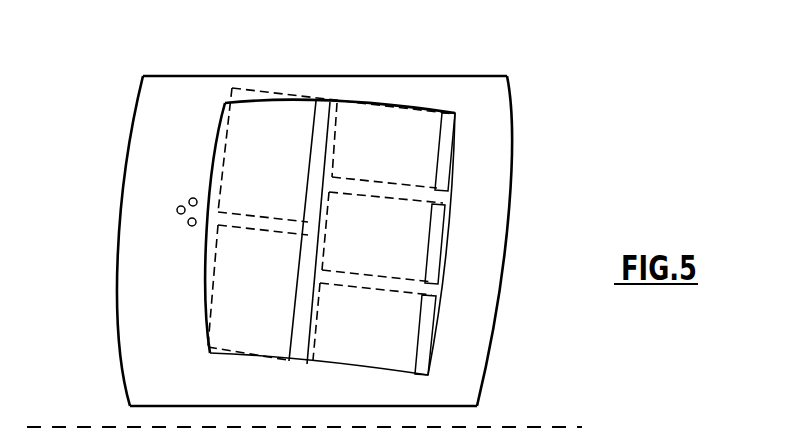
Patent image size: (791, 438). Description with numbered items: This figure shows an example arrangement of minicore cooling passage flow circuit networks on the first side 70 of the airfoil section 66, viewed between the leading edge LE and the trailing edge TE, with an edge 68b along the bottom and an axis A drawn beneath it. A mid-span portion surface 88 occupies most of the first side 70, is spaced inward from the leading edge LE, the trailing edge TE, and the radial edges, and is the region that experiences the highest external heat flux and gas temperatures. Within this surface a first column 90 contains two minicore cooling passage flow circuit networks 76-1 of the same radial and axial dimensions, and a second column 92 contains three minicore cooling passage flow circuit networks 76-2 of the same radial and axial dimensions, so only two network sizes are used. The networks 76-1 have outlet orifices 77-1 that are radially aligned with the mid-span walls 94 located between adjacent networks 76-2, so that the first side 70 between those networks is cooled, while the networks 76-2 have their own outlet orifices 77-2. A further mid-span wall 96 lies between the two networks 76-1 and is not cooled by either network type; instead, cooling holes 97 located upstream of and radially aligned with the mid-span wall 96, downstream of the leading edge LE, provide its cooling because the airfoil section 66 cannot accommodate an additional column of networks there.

The airfoil section 66 is at (327, 243).
The first side 70 is at (140, 340).
The bottom edge 68b is at (467, 383).
The trailing edge TE is at (512, 298).
The leading edge LE is at (115, 247).
The mid-span portion surface 88 is at (222, 116).
The first column 90 is at (298, 72).
The second column 92 is at (410, 90).
The minicore cooling passage flow circuit network 76-1 is at (248, 88).
The minicore cooling passage flow circuit network 76-2 is at (452, 170).
The outlet orifice 77-1 is at (322, 108).
The outlet orifice 77-2 is at (438, 167).
The mid-span wall 94 is at (437, 200).
The mid-span wall 96 is at (227, 220).
The cooling hole 97 is at (176, 208).
The axis A is at (566, 426).